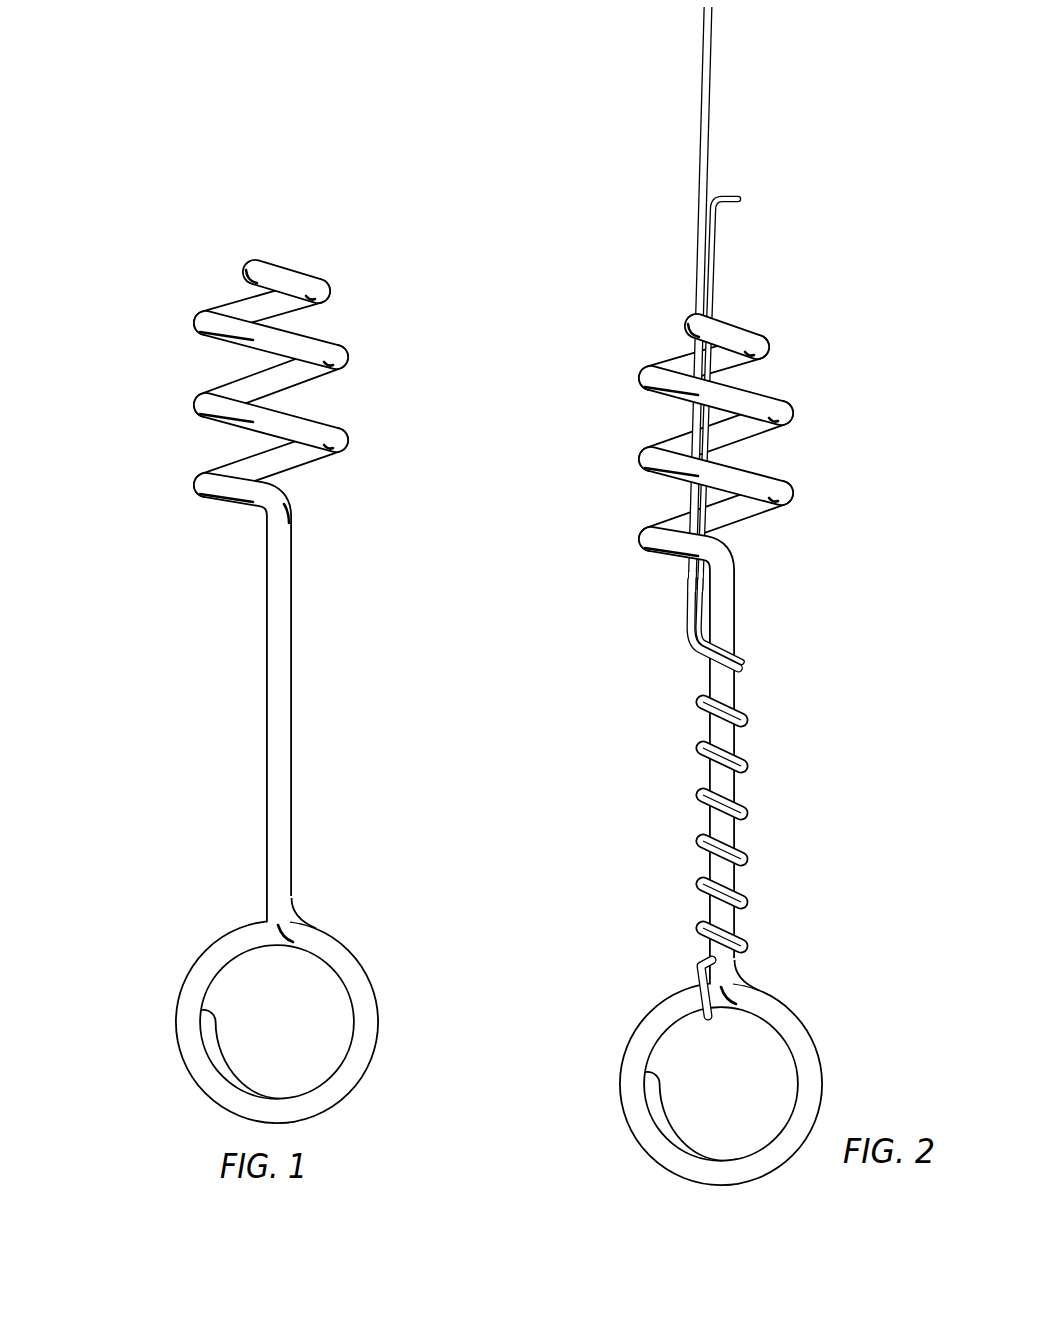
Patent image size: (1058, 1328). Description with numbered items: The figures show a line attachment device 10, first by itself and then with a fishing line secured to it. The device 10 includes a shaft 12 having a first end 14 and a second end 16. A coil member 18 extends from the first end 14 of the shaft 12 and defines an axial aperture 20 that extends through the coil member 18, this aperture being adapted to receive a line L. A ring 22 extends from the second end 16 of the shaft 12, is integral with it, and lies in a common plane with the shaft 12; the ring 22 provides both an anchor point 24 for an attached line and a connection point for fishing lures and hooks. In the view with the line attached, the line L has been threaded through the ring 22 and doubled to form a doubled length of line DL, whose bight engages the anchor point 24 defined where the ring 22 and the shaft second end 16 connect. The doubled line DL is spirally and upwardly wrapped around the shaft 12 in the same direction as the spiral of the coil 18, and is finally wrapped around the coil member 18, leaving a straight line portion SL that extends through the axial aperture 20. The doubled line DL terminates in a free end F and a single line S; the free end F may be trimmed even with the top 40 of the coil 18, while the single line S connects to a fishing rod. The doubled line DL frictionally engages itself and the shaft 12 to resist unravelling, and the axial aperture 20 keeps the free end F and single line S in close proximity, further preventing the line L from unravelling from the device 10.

In FIG. 1, the line attachment device 10 is at (284, 619).
In FIG. 2, the line attachment device 10 is at (702, 590).
In FIG. 1, the shaft 12 is at (355, 798).
In FIG. 2, the shaft 12 is at (680, 856).
In FIG. 1, the first end 14 is at (292, 519).
In FIG. 1, the second end 16 is at (293, 890).
In FIG. 2, the second end 16 is at (737, 928).
In FIG. 1, the coil member 18 is at (327, 306).
In FIG. 2, the coil member 18 is at (725, 298).
In FIG. 1, the axial aperture 20 is at (291, 231).
In FIG. 2, the axial aperture 20 is at (785, 312).
In FIG. 1, the ring 22 is at (355, 798).
In FIG. 2, the ring 22 is at (640, 856).
In FIG. 1, the anchor point 24 is at (283, 945).
In FIG. 2, the anchor point 24 is at (723, 1007).
In FIG. 2, the top of the coil 40 is at (642, 372).
In FIG. 2, the line L is at (701, 298).
In FIG. 2, the single line S is at (710, 110).
In FIG. 2, the free end F is at (740, 199).
In FIG. 2, the straight line portion SL is at (687, 494).
In FIG. 2, the doubled length of line DL is at (741, 811).